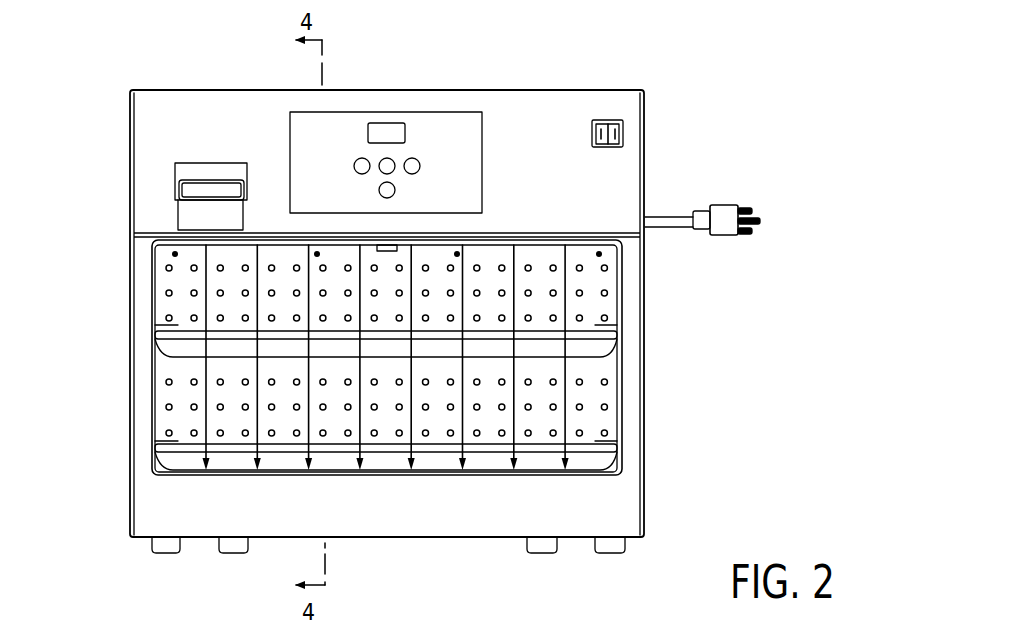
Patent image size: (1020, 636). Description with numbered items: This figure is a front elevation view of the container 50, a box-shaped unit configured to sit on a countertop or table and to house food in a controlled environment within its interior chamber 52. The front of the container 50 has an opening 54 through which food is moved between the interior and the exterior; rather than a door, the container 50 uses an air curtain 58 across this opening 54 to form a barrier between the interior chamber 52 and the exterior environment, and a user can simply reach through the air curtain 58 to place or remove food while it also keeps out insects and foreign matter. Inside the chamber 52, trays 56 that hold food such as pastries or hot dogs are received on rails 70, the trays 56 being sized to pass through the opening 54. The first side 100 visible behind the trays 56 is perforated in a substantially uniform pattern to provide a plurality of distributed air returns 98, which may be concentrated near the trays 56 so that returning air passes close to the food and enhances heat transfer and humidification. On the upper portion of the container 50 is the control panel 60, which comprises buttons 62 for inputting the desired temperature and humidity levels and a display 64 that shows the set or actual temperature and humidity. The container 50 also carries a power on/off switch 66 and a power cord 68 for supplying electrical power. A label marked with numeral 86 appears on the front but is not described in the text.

The container 50 is at (193, 75).
The interior chamber 52 is at (391, 426).
The opening 54 is at (602, 395).
The trays 56 is at (498, 462).
The air curtain 58 is at (563, 308).
The control panel 60 is at (347, 130).
The buttons 62 is at (421, 166).
The display 64 is at (386, 123).
The power on/off switch 66 is at (608, 120).
The power cord 68 is at (671, 216).
The rails 70 is at (157, 341).
The water fill indicator 86 is at (214, 181).
The air returns 98 is at (503, 290).
The first side 100 is at (597, 417).